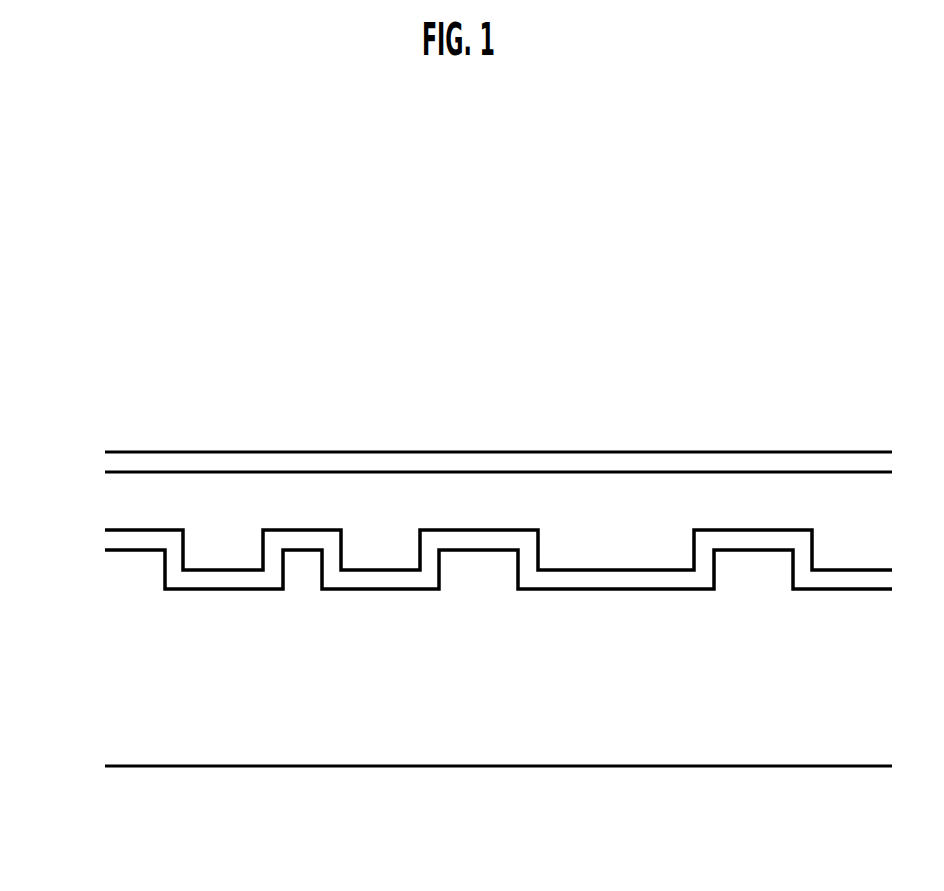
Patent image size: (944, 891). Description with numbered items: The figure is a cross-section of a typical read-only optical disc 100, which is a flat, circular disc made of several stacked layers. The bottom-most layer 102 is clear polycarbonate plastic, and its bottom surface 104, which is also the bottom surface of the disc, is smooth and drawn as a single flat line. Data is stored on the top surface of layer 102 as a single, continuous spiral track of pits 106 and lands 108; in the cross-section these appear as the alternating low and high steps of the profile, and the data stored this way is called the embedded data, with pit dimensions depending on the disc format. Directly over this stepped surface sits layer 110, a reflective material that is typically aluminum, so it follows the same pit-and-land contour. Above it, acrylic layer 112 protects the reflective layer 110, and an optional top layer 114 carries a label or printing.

The read-only optical disc 100 is at (717, 329).
The bottom-most layer 102 is at (127, 629).
The bottom surface 104 is at (413, 768).
The pits 106 is at (215, 591).
The lands 108 is at (302, 552).
The reflective layer 110 is at (125, 539).
The acrylic layer 112 is at (125, 502).
The label or printing 114 is at (125, 462).